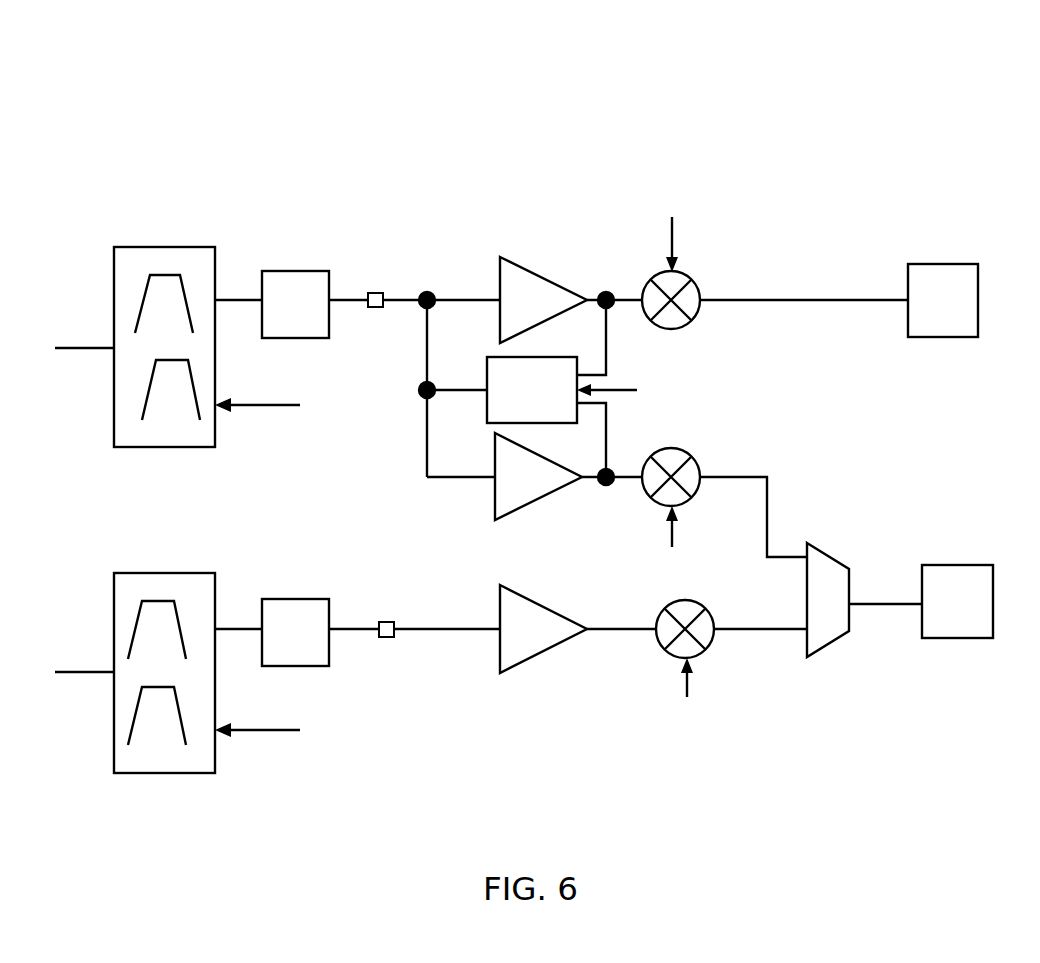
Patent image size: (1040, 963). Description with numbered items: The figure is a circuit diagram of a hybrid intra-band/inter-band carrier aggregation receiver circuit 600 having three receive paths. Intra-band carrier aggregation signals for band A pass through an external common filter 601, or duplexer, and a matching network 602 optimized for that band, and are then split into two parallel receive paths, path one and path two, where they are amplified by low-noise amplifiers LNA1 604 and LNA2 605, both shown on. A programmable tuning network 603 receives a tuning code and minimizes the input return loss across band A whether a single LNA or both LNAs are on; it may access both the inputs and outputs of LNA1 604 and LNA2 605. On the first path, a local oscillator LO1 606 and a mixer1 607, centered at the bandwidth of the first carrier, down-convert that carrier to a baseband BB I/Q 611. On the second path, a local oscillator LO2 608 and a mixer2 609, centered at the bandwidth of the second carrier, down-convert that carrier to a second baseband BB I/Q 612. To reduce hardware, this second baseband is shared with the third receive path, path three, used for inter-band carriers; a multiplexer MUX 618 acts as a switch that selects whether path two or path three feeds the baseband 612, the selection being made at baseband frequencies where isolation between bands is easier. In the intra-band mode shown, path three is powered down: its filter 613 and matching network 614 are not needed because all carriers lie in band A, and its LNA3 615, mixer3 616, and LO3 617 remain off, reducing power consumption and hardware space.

The receiver circuit 600 is at (776, 122).
The external common filter 601 is at (114, 271).
The matching network 602 is at (288, 271).
The programmable tuning network 603 is at (532, 390).
The low-noise amplifier LNA1 604 is at (500, 275).
The low-noise amplifier LNA2 605 is at (495, 506).
The local oscillator LO1 606 is at (638, 213).
The mixer1 607 is at (693, 287).
The local oscillator LO2 608 is at (638, 569).
The mixer2 609 is at (693, 461).
The baseband BB I/Q 611 is at (925, 264).
The baseband BB I/Q 612 is at (940, 565).
The filter 613 is at (114, 610).
The matching network 614 is at (285, 599).
The LNA3 615 is at (500, 648).
The mixer3 616 is at (662, 650).
The LO3 617 is at (730, 723).
The multiplexer MUX 618 is at (830, 555).